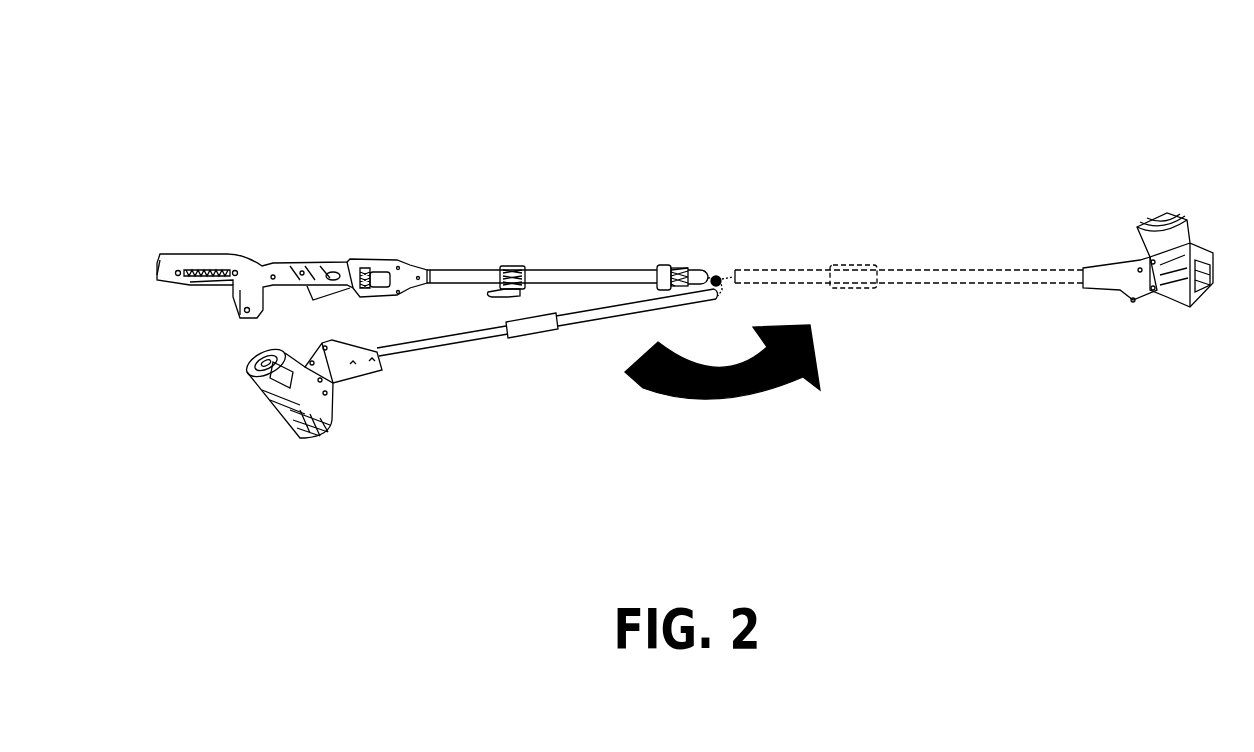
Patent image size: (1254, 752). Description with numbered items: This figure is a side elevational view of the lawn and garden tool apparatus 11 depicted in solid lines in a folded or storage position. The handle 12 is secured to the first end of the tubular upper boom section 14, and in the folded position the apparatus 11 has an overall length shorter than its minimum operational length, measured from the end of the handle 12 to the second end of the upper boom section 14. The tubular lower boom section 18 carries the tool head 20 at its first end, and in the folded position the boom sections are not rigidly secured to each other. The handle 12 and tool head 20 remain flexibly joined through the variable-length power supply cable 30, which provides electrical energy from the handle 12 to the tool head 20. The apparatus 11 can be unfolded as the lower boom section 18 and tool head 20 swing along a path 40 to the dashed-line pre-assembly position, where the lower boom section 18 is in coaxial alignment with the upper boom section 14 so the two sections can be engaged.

The lawn and garden tool apparatus 11 is at (519, 112).
The handle 12 is at (305, 246).
The upper boom section 14 is at (579, 270).
The lower boom section 18 is at (944, 280).
The tool head 20 is at (338, 442).
The variable-length power supply cable 30 is at (723, 278).
The path 40 is at (714, 366).